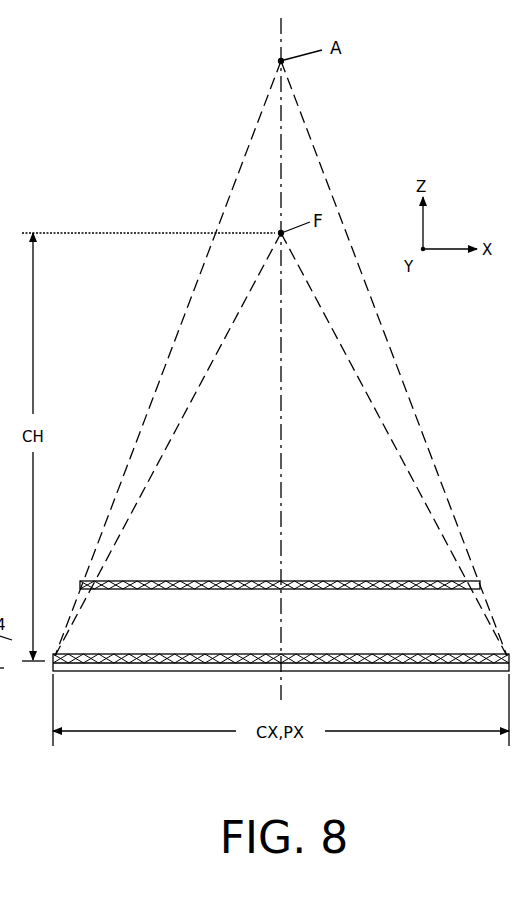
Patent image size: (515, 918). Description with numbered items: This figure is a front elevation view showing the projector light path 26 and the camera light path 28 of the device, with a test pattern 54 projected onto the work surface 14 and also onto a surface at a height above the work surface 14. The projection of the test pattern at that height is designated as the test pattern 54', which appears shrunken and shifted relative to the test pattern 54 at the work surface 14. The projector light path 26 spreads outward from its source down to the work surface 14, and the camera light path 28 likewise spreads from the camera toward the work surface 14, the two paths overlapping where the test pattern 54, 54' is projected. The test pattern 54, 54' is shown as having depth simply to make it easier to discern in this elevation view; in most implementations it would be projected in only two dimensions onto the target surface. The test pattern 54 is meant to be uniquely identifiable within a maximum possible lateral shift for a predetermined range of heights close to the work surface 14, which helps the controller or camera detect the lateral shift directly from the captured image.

The work surface 14 is at (490, 655).
The projector light path 26 is at (157, 385).
The camera light path 28 is at (214, 359).
The test pattern 54 is at (281, 635).
The shrunken, shifted test pattern 54' is at (280, 561).